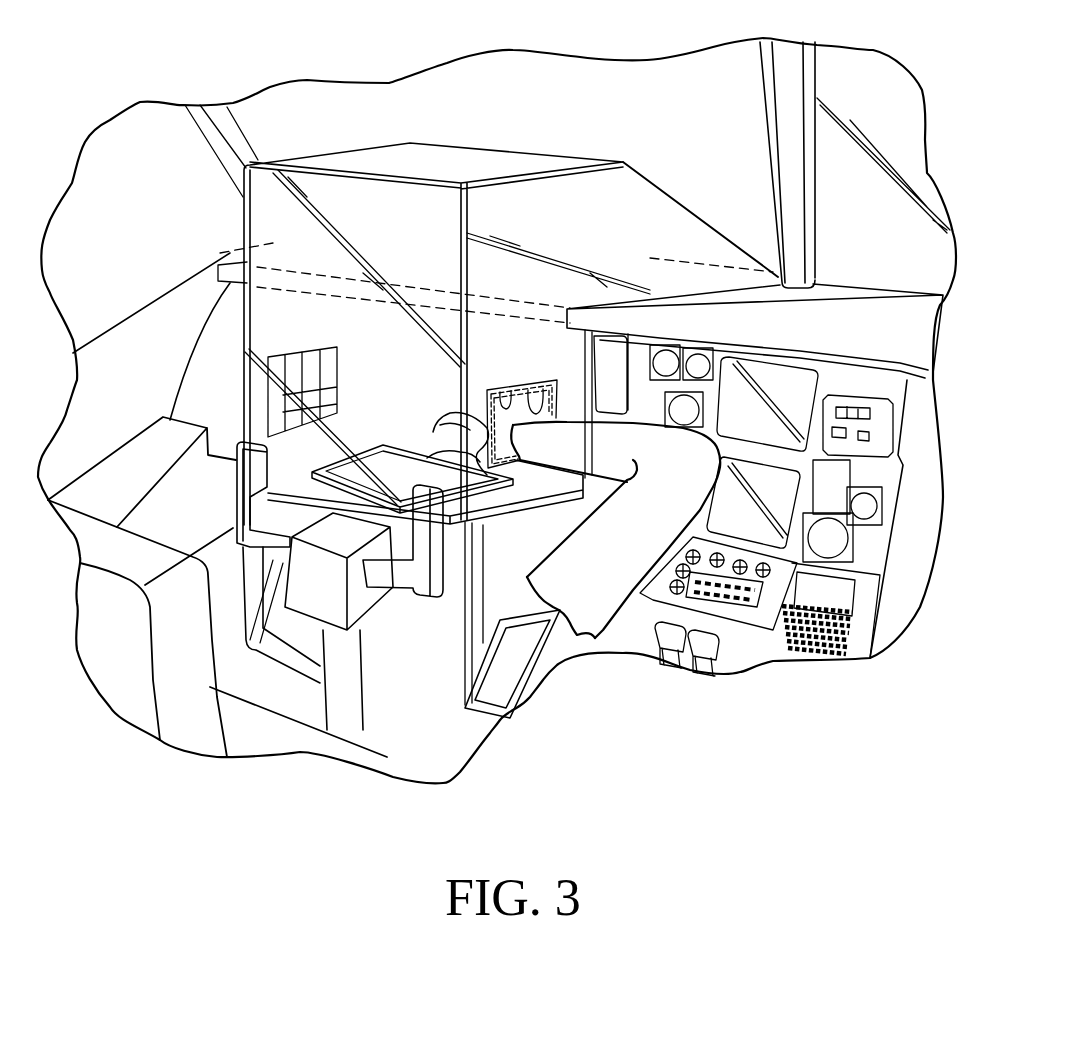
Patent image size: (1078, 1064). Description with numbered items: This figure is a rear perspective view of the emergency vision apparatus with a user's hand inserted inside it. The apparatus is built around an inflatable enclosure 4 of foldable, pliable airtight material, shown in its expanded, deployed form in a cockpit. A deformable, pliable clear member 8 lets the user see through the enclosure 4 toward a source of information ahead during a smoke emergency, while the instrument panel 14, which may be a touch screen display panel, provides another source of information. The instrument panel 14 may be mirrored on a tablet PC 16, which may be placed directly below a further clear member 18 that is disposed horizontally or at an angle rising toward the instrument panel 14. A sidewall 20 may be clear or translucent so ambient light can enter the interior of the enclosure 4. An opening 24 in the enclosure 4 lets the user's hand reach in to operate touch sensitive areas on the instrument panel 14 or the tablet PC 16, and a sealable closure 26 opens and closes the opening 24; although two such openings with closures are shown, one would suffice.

The inflatable enclosure 4 is at (412, 144).
The clear member 8 is at (313, 265).
The instrument panel 14 is at (594, 358).
The tablet PC 16 is at (371, 457).
The clear member 18 is at (512, 498).
The sidewall 20 is at (626, 231).
The opening 24 is at (512, 386).
The sealable closure 26 is at (283, 340).